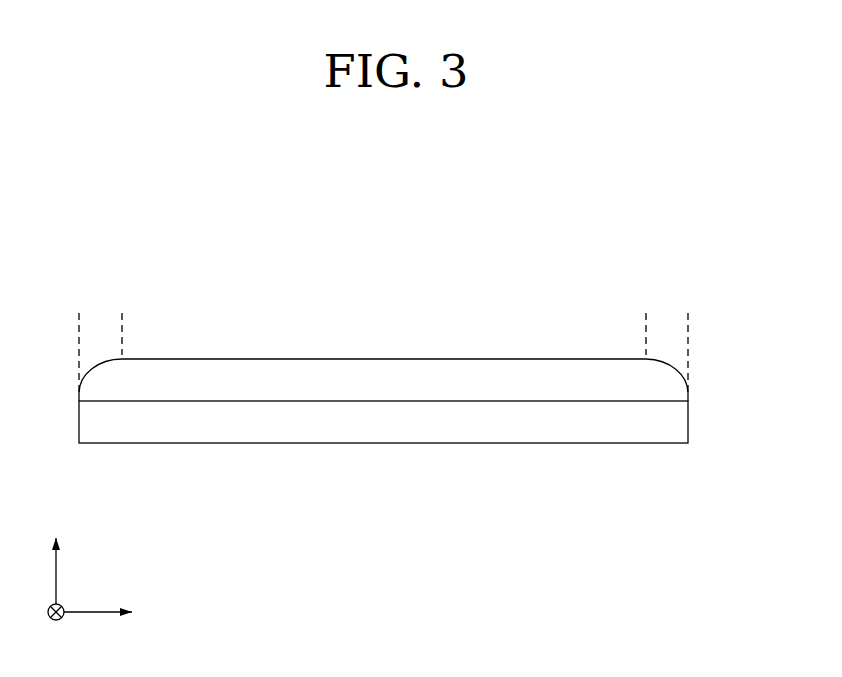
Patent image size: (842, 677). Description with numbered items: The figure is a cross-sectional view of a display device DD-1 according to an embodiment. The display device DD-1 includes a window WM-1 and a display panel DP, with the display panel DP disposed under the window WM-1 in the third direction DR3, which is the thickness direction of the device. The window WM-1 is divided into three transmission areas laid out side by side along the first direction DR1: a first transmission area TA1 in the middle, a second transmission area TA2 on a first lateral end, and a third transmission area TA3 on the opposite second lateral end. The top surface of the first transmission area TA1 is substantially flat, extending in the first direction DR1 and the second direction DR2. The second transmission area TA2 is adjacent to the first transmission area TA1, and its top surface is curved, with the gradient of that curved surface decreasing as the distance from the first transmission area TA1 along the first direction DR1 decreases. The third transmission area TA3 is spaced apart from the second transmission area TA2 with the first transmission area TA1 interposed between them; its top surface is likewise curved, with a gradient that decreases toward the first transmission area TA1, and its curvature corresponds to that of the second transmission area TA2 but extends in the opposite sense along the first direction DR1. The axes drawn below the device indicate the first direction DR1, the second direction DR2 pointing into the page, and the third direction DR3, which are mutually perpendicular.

The display device DD-1 is at (712, 266).
The window WM-1 is at (663, 378).
The display panel DP is at (675, 423).
The first transmission area TA1 is at (646, 315).
The second transmission area TA2 is at (122, 315).
The third transmission area TA3 is at (646, 315).
The first direction DR1 is at (120, 613).
The second direction DR2 is at (56, 628).
The third direction DR3 is at (56, 557).